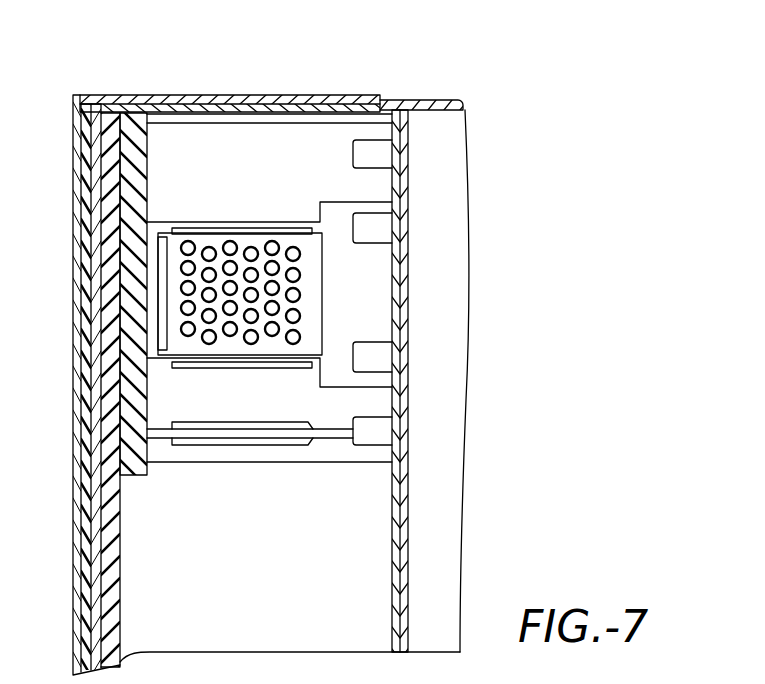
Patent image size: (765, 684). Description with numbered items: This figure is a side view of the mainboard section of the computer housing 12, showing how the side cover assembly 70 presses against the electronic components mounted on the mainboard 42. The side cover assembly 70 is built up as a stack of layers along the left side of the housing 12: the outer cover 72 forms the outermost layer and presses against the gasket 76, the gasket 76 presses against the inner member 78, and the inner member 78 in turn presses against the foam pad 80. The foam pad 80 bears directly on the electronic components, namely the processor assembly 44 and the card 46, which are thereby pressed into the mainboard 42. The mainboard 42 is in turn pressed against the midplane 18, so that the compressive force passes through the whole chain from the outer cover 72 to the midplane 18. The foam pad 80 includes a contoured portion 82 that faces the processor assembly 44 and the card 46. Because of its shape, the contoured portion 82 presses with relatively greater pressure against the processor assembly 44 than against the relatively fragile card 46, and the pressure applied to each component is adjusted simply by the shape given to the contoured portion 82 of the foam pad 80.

The housing 12 is at (497, 117).
The midplane 18 is at (405, 190).
The mainboard 42 is at (397, 112).
The processor assembly 44 is at (237, 248).
The card 46 is at (335, 437).
The side cover assembly 70 is at (73, 95).
The outer cover 72 is at (80, 160).
The gasket 76 is at (90, 215).
The inner member 78 is at (100, 262).
The foam pad 80 is at (105, 326).
The contoured portion 82 is at (120, 393).